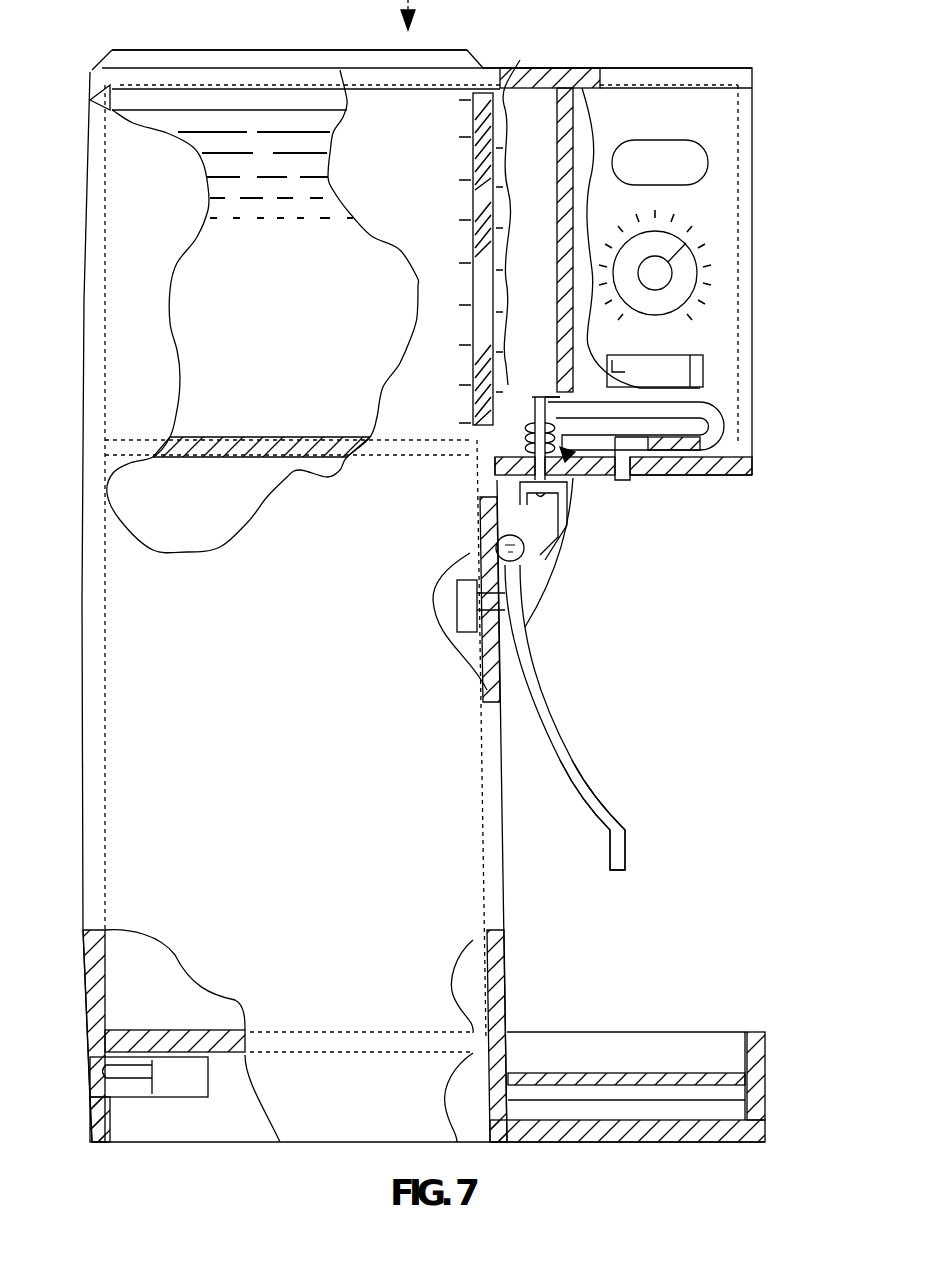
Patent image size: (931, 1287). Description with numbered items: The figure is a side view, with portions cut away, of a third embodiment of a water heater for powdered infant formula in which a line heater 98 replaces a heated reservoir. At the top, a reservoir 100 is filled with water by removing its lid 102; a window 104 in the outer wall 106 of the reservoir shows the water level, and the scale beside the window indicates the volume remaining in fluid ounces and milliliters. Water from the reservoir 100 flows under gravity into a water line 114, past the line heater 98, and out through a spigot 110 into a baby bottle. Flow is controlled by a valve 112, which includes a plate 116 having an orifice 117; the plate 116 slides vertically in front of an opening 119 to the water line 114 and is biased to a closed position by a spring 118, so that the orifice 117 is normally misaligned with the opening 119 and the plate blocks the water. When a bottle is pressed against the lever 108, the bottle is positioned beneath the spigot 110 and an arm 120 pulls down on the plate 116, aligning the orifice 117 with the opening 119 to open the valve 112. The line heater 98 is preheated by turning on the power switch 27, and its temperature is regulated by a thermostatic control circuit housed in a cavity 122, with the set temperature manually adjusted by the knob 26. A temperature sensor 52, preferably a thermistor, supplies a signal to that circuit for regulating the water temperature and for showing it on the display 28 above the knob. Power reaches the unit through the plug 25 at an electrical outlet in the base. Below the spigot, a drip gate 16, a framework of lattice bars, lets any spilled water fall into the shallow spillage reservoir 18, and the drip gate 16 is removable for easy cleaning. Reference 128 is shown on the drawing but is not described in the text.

The drip gate 16 is at (708, 1073).
The spillage reservoir 18 is at (677, 1110).
The plug 25 is at (167, 1099).
The knob 26 is at (695, 260).
The on/off switch 27 is at (700, 360).
The display 28 is at (702, 158).
The temperature sensor 52 is at (683, 470).
The line heater 98 is at (725, 477).
The reservoir 100 is at (210, 142).
The lid 102 is at (262, 50).
The window 104 is at (487, 107).
The outer wall 106 is at (428, 113).
The lever 108 is at (572, 765).
The spigot 110 is at (630, 490).
The valve 112 is at (580, 480).
The water line 114 is at (733, 420).
The plate 116 is at (573, 480).
The orifice 117 is at (533, 385).
The spring 118 is at (507, 458).
The opening 119 is at (557, 400).
The arm 120 is at (533, 578).
The cavity 122 is at (125, 992).
The pump switch 128 is at (462, 640).